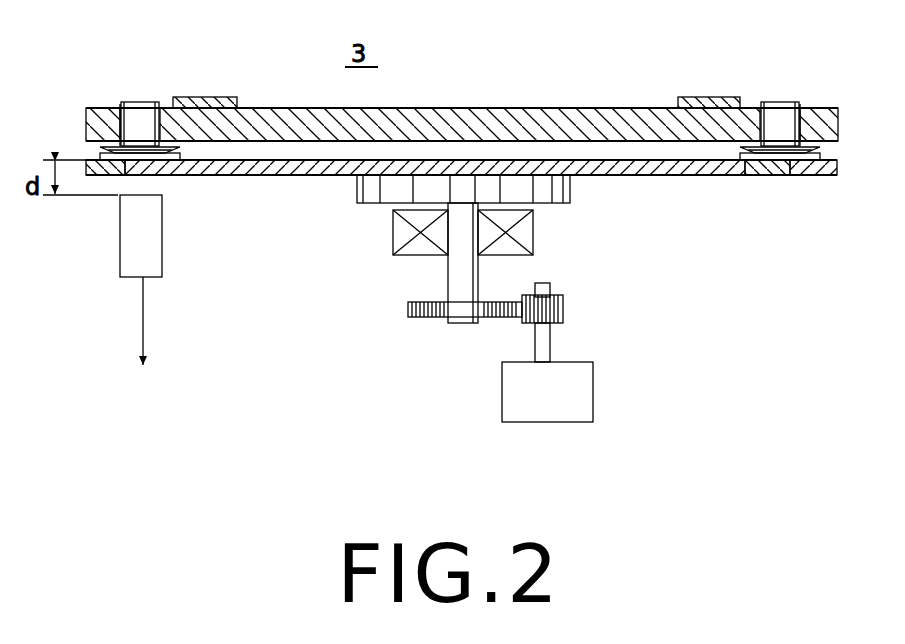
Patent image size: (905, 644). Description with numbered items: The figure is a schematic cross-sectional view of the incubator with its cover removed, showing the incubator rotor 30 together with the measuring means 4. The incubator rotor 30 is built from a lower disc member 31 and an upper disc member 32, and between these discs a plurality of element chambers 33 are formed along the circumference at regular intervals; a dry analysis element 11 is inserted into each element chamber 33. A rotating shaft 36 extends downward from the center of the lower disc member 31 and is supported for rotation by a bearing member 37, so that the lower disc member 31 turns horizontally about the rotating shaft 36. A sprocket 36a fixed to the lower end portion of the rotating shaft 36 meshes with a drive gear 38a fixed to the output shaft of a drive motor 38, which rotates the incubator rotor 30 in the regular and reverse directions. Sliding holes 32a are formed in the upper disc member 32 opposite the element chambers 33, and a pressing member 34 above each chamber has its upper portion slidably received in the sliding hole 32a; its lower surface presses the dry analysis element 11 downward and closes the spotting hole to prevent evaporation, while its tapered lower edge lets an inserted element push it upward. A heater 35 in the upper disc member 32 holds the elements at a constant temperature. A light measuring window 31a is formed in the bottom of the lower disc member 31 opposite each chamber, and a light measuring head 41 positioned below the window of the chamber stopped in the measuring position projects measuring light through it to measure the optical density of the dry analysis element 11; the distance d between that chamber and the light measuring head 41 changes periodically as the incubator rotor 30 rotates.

The measuring means 4 is at (110, 278).
The dry analysis element 11 is at (205, 170).
The incubator rotor 30 is at (555, 106).
The lower disc member 31 is at (628, 175).
The light measuring window 31a is at (120, 176).
The upper disc member 32 is at (471, 108).
The sliding hole 32a is at (118, 104).
The element chamber 33 is at (100, 148).
The pressing member 34 is at (138, 108).
The heater 35 is at (204, 97).
The rotating shaft 36 is at (455, 276).
The sprocket 36a is at (418, 320).
The bearing member 37 is at (398, 232).
The drive motor 38 is at (585, 400).
The drive gear 38a is at (565, 305).
The light measuring head 41 is at (157, 268).